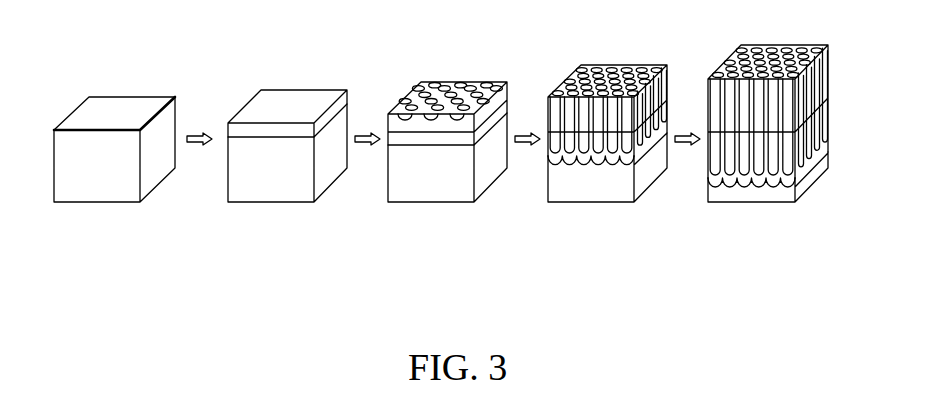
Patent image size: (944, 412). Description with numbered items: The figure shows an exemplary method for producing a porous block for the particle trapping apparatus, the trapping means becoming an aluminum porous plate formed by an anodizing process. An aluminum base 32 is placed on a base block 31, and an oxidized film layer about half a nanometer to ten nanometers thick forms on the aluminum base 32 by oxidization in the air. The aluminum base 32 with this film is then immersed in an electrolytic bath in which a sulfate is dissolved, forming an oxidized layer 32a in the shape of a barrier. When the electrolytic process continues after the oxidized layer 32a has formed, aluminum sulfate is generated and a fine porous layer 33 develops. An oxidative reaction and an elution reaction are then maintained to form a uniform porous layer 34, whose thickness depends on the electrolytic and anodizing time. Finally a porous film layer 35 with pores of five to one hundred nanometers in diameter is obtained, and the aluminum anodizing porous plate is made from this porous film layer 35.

The base block 31 is at (108, 192).
The aluminum base 32 is at (125, 107).
The oxidized layer 32a is at (300, 102).
The fine porous layer 33 is at (468, 82).
The uniform porous layer 34 is at (613, 65).
The porous film layer 35 is at (758, 87).